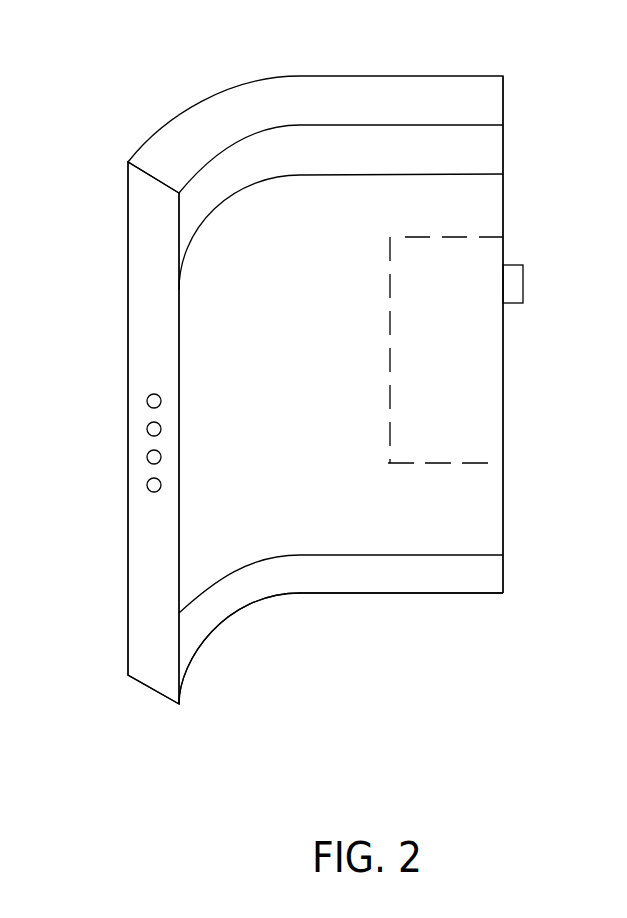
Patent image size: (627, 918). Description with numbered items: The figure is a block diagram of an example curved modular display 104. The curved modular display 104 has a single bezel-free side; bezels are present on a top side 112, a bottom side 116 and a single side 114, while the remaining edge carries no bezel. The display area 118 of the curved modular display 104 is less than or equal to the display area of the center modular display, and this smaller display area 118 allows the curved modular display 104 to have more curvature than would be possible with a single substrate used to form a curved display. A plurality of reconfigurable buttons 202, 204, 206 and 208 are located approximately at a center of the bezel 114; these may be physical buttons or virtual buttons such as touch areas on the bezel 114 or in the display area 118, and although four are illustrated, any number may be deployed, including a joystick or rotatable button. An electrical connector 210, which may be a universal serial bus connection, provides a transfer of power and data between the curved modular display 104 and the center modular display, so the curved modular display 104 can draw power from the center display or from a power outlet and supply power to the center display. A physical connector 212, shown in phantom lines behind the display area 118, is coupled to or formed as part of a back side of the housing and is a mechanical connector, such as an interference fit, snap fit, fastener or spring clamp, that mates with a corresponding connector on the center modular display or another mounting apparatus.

The curved modular display 104 is at (470, 76).
The top side 112 is at (375, 140).
The single side 114 is at (138, 332).
The bottom side 116 is at (410, 570).
The display area 118 is at (488, 210).
The reconfigurable button 202 is at (147, 401).
The reconfigurable button 204 is at (147, 429).
The reconfigurable button 206 is at (147, 457).
The reconfigurable button 208 is at (147, 485).
The electrical connector 210 is at (523, 282).
The physical connector 212 is at (484, 358).